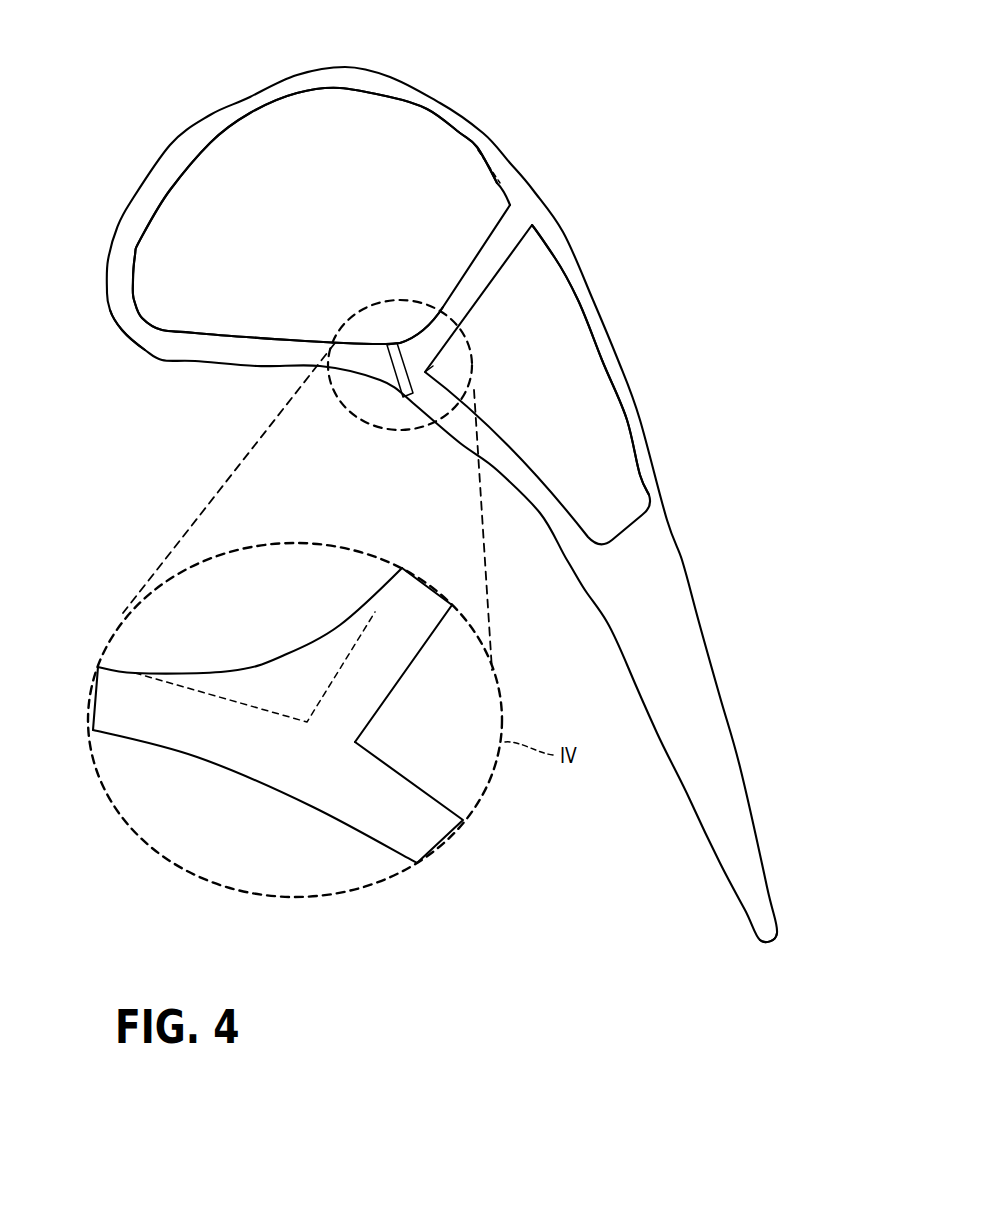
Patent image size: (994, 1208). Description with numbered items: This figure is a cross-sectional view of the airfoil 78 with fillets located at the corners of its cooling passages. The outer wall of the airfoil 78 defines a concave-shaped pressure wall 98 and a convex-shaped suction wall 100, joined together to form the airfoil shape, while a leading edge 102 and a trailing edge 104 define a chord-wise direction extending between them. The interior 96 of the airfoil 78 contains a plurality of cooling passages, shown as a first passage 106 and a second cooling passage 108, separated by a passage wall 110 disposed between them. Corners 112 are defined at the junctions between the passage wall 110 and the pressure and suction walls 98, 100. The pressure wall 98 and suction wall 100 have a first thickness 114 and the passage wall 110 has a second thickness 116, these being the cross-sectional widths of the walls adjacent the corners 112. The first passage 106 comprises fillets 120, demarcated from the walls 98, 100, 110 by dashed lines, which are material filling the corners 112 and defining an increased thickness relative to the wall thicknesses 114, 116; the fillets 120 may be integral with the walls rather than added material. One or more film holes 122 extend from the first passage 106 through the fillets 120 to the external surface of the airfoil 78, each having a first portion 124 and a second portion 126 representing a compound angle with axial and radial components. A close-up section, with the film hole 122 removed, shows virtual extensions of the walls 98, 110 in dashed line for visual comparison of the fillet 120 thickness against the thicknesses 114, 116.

The airfoil 78 is at (166, 121).
The interior 96 is at (343, 152).
The pressure wall 98 is at (462, 412).
The suction wall 100 is at (565, 230).
The leading edge 102 is at (115, 323).
The trailing edge 104 is at (770, 948).
The first passage 106 is at (263, 233).
The second cooling passage 108 is at (548, 395).
The passage wall 110 is at (463, 290).
The corners 112 is at (537, 228).
The first thickness 114 is at (122, 662).
The second thickness 116 is at (446, 628).
The fillets 120 is at (503, 176).
The film holes 122 is at (529, 207).
The first portion 124 is at (523, 185).
The second portion 126 is at (497, 203).